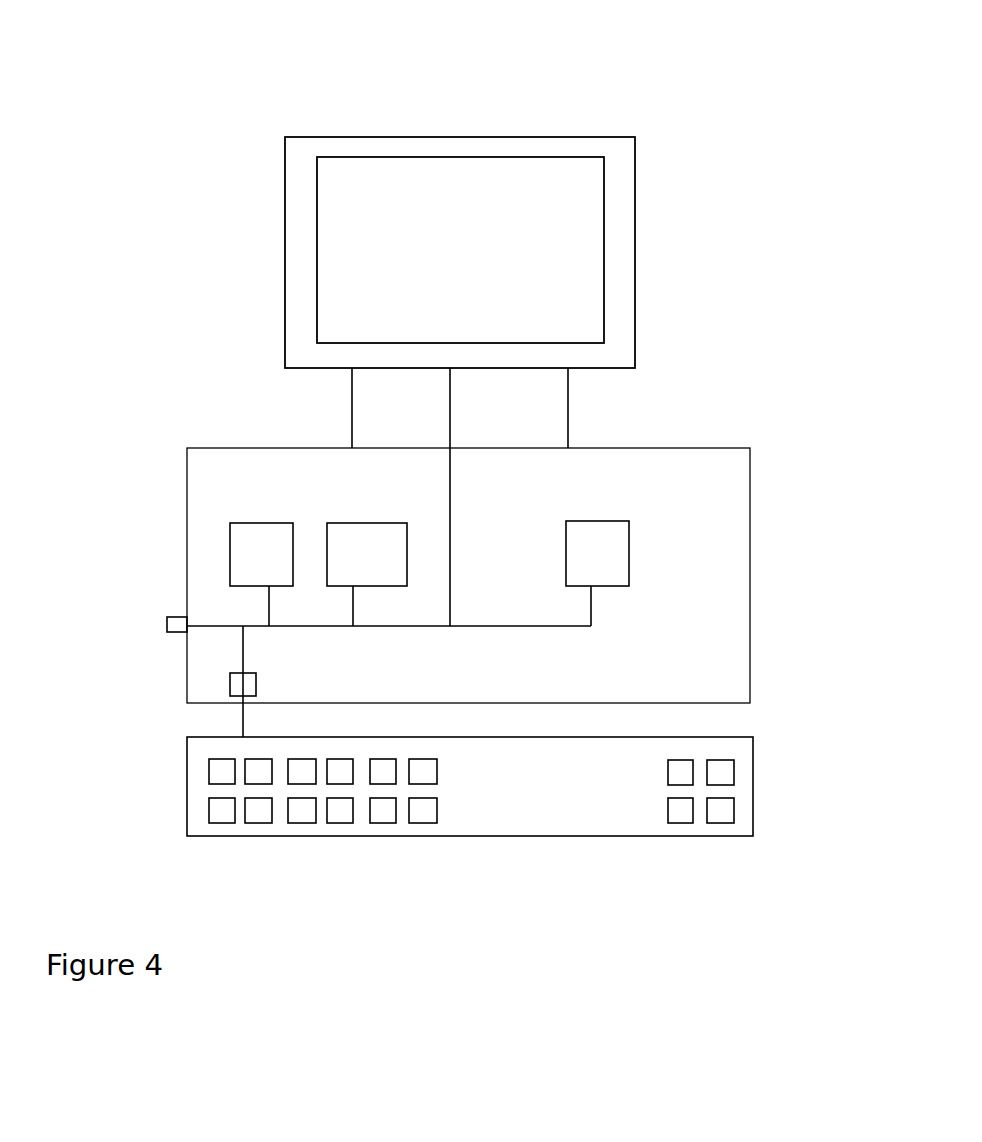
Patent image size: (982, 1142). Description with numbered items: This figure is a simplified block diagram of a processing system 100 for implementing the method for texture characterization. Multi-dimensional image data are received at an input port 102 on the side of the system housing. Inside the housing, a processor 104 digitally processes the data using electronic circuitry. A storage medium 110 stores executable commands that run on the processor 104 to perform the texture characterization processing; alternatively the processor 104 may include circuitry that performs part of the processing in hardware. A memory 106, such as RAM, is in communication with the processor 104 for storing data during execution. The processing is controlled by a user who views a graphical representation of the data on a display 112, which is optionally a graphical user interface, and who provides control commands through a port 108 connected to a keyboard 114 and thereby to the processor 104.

The processing system 100 is at (608, 100).
The input port 102 is at (173, 617).
The processor 104 is at (230, 523).
The memory 106 is at (353, 523).
The port 108 is at (230, 687).
The storage medium 110 is at (620, 520).
The display 112 is at (420, 249).
The keyboard 114 is at (628, 775).